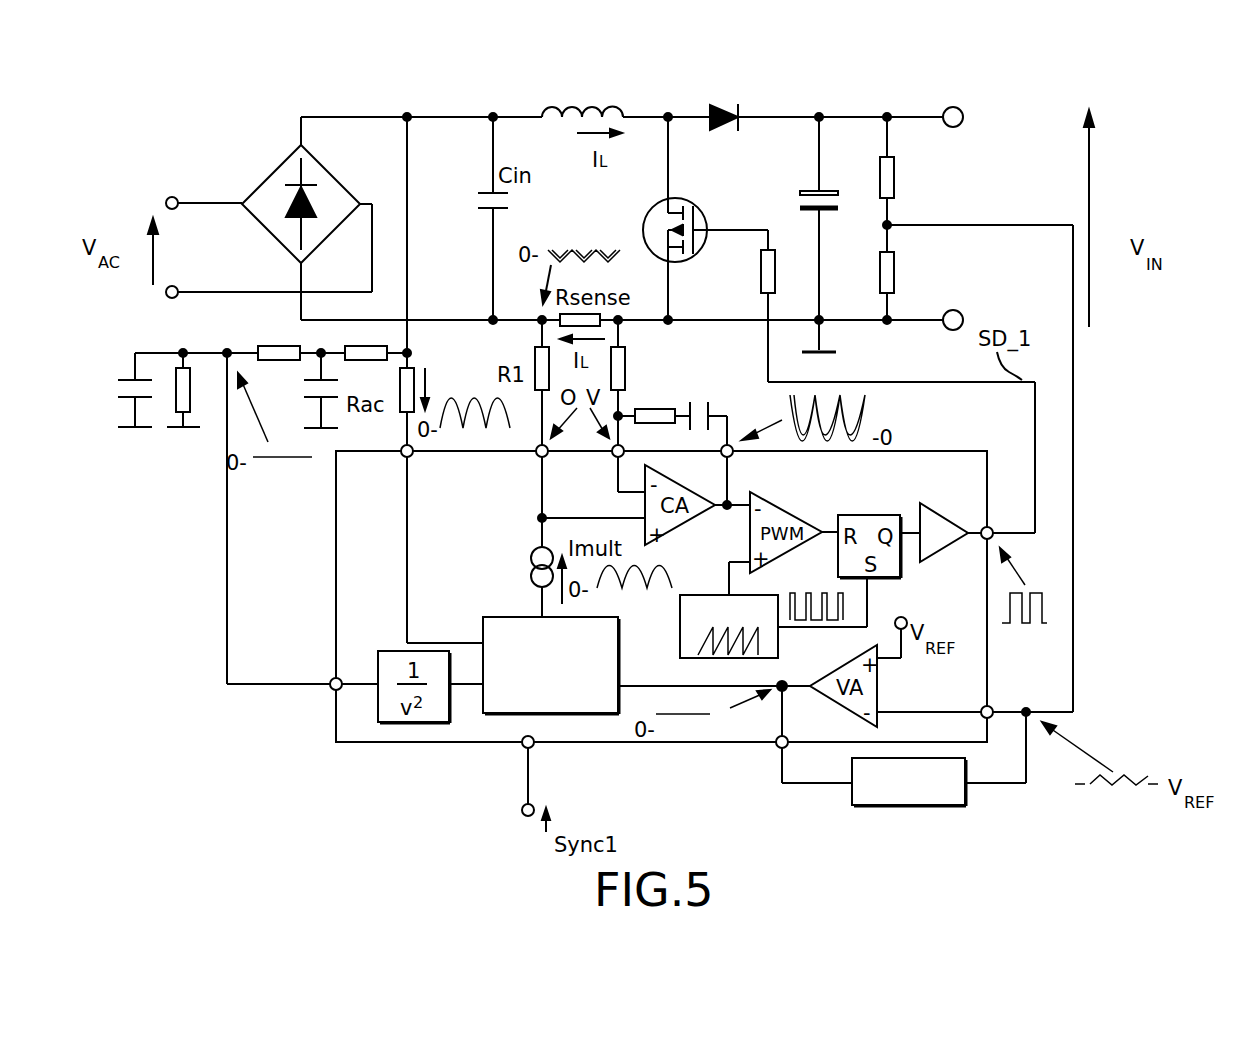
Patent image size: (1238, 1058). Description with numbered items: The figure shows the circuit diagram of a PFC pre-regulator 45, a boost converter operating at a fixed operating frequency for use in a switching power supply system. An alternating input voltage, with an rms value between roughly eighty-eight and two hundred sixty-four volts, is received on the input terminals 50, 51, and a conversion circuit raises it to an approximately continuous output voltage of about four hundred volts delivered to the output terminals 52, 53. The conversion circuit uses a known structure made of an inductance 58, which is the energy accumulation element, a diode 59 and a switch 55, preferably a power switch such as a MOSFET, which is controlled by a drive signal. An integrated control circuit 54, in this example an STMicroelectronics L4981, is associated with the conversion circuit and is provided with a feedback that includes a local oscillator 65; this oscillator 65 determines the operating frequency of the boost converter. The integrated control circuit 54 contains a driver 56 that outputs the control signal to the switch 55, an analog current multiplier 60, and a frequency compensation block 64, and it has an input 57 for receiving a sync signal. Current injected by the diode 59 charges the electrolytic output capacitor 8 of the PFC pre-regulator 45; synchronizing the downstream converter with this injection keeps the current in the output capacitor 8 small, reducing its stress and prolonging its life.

The PFC pre-regulator 45 is at (252, 85).
The input terminal 50 is at (201, 202).
The input terminal 51 is at (178, 291).
The output terminal 52 is at (953, 108).
The output terminal 53 is at (958, 311).
The integrated control circuit 54 is at (365, 742).
The switch 55 is at (641, 227).
The driver 56 is at (934, 507).
The input 57 is at (535, 745).
The inductance 58 is at (588, 104).
The diode 59 is at (733, 108).
The analog current multiplier 60 is at (497, 617).
The frequency compensation block 64 is at (965, 800).
The local oscillator 65 is at (718, 595).
The output capacitor 8 is at (800, 193).